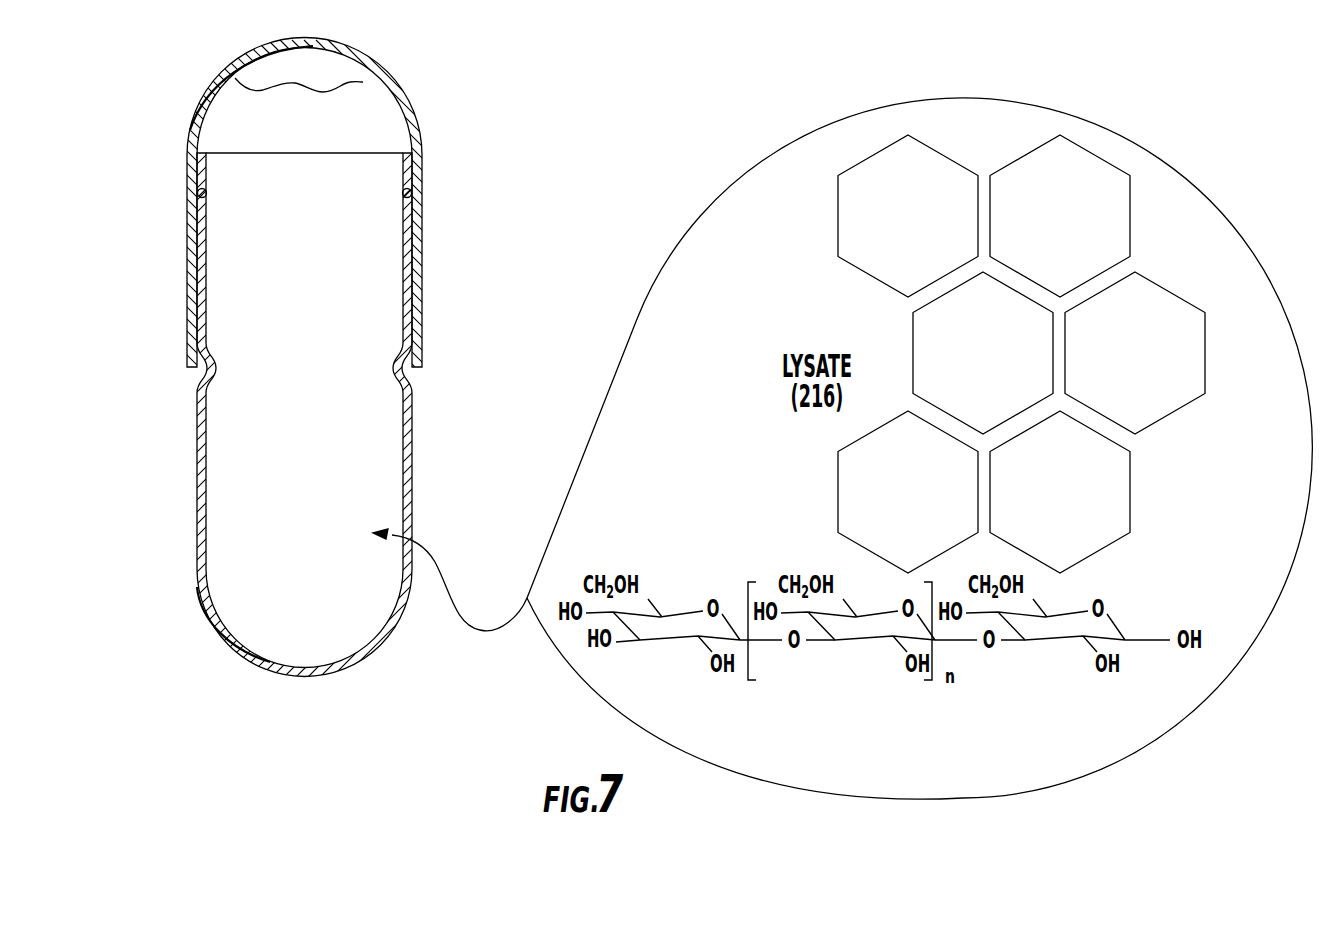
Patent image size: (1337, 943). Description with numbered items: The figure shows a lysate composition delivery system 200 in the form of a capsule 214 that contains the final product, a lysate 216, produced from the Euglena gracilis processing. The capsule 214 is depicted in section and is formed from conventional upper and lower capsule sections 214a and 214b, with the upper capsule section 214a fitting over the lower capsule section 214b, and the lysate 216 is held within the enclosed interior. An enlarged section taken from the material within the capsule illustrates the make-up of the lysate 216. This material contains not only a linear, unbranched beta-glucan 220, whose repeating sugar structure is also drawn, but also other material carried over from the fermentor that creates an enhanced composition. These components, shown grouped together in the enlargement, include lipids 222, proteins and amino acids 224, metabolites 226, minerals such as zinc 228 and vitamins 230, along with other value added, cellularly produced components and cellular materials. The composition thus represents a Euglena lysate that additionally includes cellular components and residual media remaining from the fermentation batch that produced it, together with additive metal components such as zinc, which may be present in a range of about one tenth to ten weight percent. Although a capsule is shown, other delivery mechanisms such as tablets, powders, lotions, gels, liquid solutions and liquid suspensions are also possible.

The lysate composition delivery system 200 is at (464, 357).
The capsule 214 is at (464, 357).
The upper capsule section 214a is at (198, 194).
The lower capsule section 214b is at (415, 443).
The lysate 216 is at (363, 82).
The beta-glucan 220 is at (908, 492).
The lipids 222 is at (908, 216).
The proteins and amino acids 224 is at (1060, 216).
The metabolites 226 is at (1135, 353).
The minerals such as zinc 228 is at (983, 353).
The vitamins 230 is at (1060, 492).